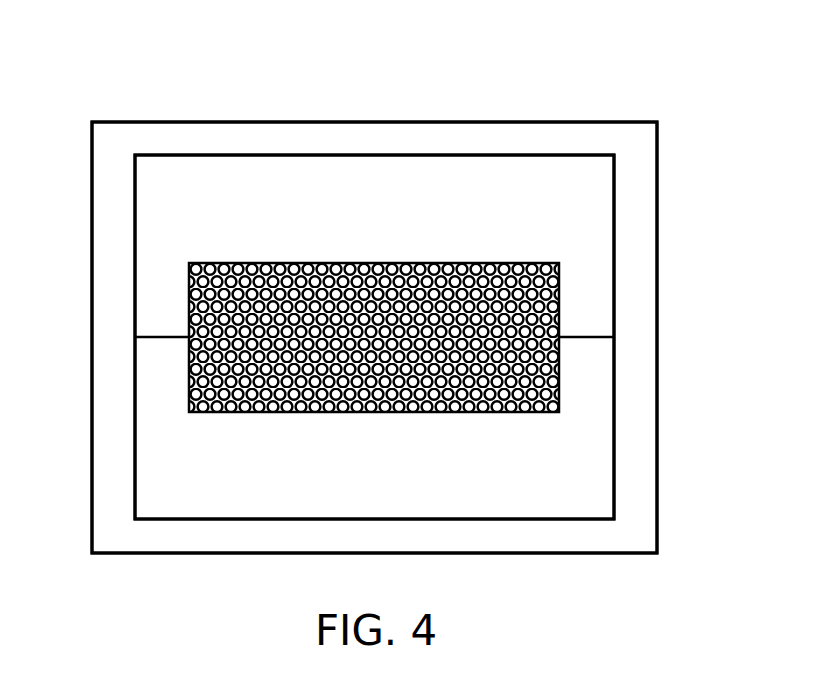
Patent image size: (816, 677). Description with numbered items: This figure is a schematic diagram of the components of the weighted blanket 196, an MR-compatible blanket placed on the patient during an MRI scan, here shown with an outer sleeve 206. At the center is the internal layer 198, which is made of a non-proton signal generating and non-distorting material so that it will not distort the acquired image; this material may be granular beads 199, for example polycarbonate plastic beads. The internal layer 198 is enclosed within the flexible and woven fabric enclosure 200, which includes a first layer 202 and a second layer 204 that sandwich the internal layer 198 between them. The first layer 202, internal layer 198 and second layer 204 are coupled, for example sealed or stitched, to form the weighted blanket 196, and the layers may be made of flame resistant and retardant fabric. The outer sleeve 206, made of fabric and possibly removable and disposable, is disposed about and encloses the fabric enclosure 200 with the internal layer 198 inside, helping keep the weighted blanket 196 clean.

The weighted blanket 196 is at (118, 85).
The internal layer 198 is at (559, 377).
The granular beads 199 is at (189, 303).
The flexible and woven fabric enclosure 200 is at (115, 212).
The first layer 202 is at (614, 193).
The second layer 204 is at (614, 463).
The outer sleeve 206 is at (657, 518).